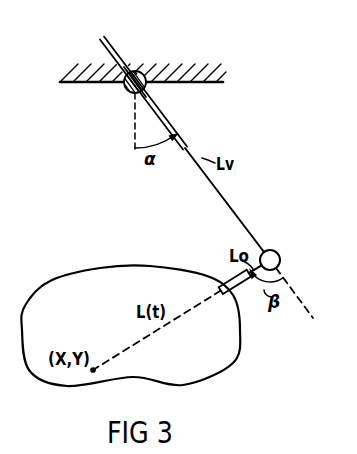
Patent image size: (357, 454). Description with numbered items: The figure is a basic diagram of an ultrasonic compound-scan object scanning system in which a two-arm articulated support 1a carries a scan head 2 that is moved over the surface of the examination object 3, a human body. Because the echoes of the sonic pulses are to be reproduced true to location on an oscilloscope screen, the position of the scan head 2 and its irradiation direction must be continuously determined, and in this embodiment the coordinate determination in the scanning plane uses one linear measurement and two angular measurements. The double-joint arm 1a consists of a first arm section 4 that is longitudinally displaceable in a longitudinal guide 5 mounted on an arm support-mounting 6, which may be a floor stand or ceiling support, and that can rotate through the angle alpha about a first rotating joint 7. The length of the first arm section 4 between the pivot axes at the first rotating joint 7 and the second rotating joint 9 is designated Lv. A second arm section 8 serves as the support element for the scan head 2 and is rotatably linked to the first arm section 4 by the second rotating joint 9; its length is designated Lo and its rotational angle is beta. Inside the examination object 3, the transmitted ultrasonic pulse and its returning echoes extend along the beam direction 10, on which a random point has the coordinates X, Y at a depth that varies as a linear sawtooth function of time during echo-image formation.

The two-arm articulated support 1a is at (214, 139).
The scan head 2 is at (229, 276).
The examination object 3 is at (73, 278).
The first arm section 4 is at (245, 223).
The longitudinal guide 5 is at (132, 56).
The arm support-mounting 6 is at (200, 78).
The first rotating joint 7 is at (147, 67).
The second arm section 8 is at (252, 282).
The second rotating joint 9 is at (280, 255).
The beam direction 10 is at (128, 348).